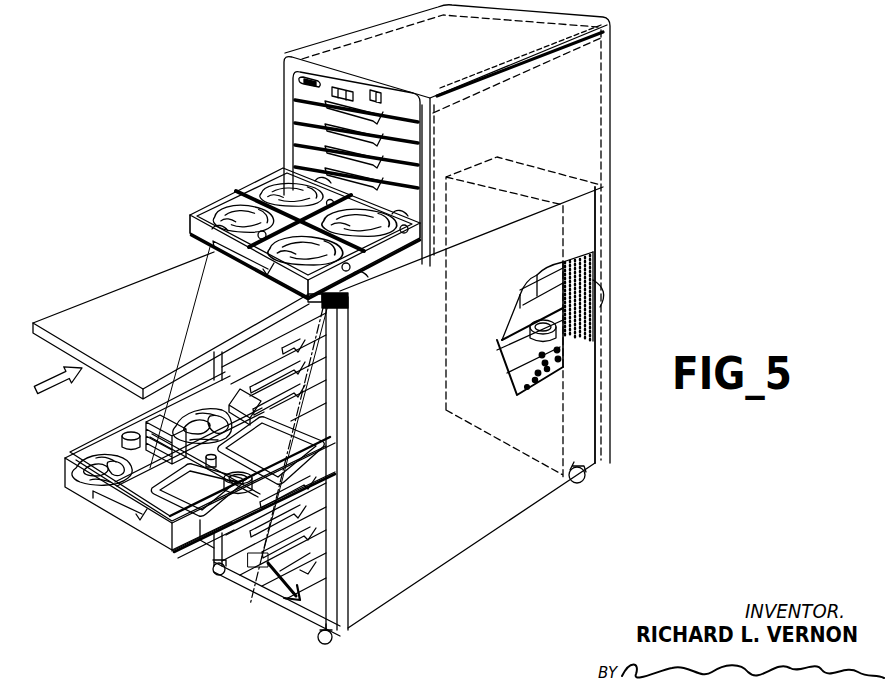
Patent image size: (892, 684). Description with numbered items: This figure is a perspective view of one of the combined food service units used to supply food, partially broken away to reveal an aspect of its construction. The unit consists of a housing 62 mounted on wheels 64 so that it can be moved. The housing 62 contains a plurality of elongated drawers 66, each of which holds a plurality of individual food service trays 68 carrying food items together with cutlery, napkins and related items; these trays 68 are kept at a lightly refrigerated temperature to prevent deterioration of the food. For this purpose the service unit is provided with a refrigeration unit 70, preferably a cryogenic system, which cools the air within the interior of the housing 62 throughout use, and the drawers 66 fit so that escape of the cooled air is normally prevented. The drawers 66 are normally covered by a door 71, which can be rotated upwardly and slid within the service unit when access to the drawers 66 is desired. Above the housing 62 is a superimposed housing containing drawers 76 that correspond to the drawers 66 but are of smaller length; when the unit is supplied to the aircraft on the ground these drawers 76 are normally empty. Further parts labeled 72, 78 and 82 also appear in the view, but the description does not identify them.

The housing 62 is at (407, 432).
The wheels 64 is at (583, 483).
The elongated drawers 66 is at (66, 476).
The food service trays 68 is at (212, 412).
The refrigeration unit 70 is at (597, 304).
The door 71 is at (158, 322).
The upper cabinet 72 is at (522, 137).
The drawers 76 is at (296, 163).
The hinge rail 78 is at (573, 58).
The latch 82 is at (299, 82).